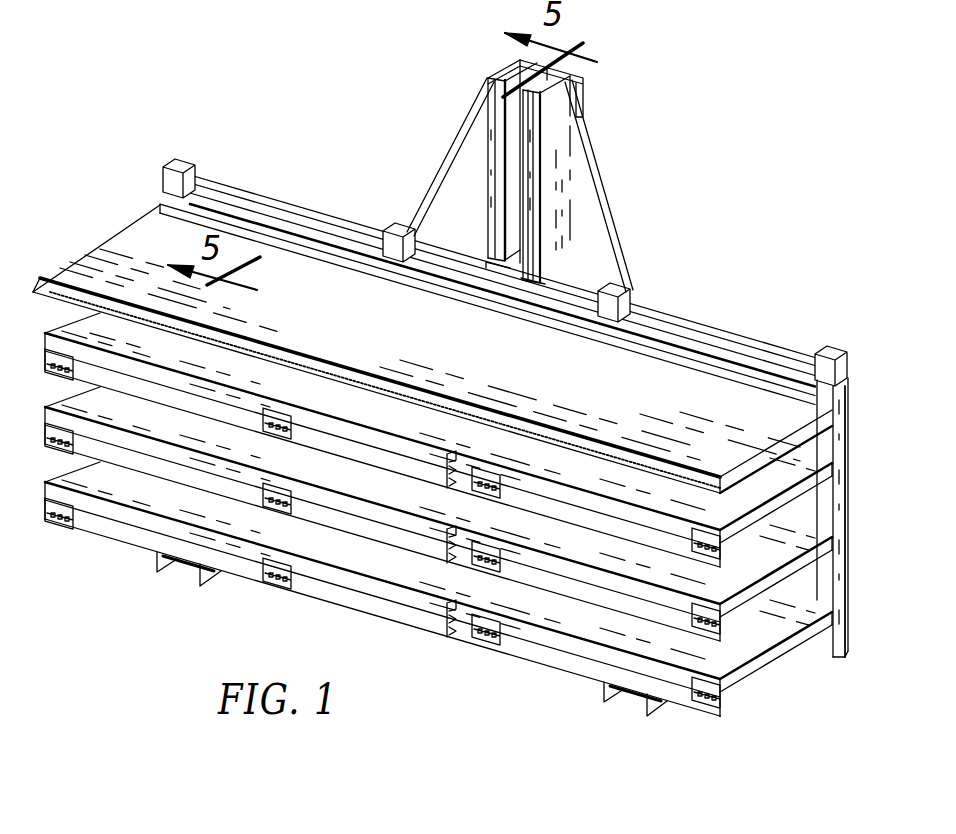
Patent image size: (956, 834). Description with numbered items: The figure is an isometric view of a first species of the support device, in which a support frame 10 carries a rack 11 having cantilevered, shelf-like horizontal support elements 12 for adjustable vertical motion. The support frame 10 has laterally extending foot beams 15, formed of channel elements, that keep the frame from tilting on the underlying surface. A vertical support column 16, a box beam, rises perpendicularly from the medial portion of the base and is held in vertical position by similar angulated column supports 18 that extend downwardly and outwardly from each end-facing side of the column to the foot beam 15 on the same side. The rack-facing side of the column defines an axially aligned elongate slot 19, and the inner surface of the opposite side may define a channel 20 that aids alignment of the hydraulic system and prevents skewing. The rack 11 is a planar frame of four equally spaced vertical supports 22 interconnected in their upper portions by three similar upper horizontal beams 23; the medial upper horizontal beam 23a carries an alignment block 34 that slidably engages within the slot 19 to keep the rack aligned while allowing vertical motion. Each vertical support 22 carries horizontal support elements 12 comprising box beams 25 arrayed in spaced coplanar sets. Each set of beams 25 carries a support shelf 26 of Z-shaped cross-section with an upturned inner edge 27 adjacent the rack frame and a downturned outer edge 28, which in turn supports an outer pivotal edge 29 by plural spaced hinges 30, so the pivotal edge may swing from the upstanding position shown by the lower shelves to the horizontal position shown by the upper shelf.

The support frame 10 is at (540, 195).
The rack 11 is at (856, 420).
The horizontal support elements 12 is at (522, 673).
The foot beams 15 is at (200, 578).
The vertical support column 16 is at (490, 192).
The column supports 18 is at (438, 175).
The elongate slot 19 is at (510, 108).
The channel 20 is at (572, 78).
The vertical supports 22 is at (180, 162).
The upper horizontal beams 23 is at (215, 186).
The medial upper horizontal beam 23a is at (480, 280).
The box beams 25 is at (760, 603).
The support shelf 26 is at (168, 238).
The upturned inner edge 27 is at (800, 385).
The downturned outer edge 28 is at (688, 480).
The outer pivotal edge 29 is at (235, 475).
The hinges 30 is at (68, 446).
The alignment block 34 is at (497, 270).